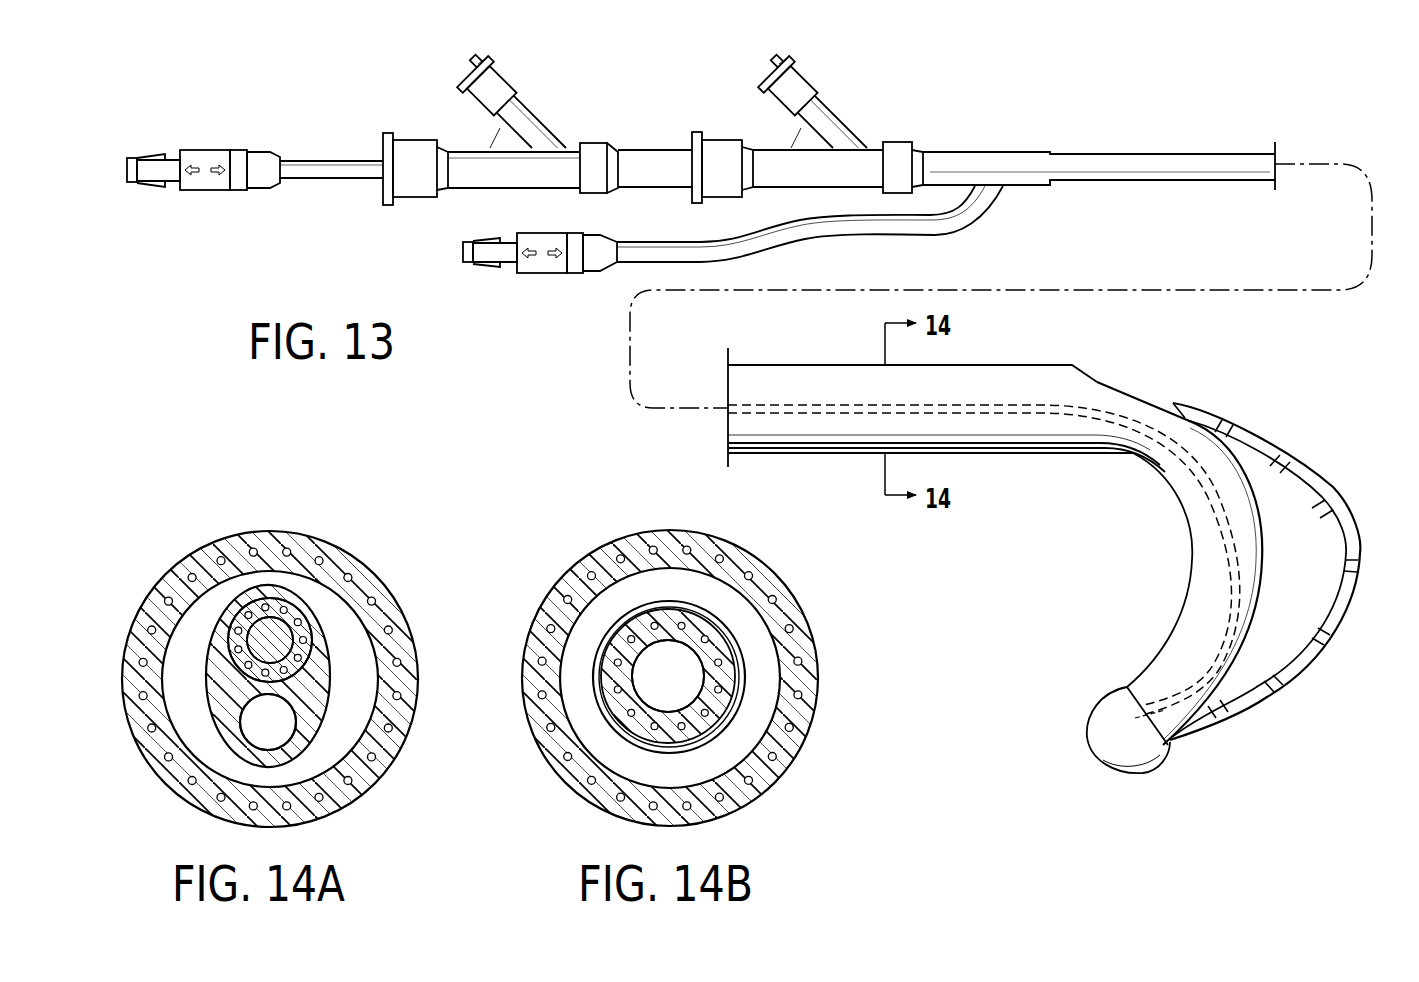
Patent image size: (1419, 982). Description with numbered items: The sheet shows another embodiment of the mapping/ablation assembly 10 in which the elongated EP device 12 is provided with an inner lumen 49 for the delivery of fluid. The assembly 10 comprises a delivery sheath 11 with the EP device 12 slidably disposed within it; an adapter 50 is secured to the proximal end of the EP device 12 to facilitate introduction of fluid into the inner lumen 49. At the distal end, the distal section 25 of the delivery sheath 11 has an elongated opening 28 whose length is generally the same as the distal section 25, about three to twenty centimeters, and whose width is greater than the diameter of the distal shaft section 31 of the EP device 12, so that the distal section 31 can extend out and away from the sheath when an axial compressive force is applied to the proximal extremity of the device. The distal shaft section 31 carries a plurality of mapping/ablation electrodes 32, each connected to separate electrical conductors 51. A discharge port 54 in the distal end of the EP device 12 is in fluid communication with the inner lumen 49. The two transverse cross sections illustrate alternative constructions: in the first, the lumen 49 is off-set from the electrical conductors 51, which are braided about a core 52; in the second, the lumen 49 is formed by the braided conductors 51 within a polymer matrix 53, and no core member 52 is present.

In FIG. 13, the mapping/ablation assembly 10 is at (1318, 128).
In FIG. 13, the delivery sheath 11 is at (1190, 152).
In FIG. 14A, the delivery sheath 11 is at (225, 528).
In FIG. 14B, the delivery sheath 11 is at (790, 774).
In FIG. 13, the EP device 12 is at (1210, 396).
In FIG. 14A, the EP device 12 is at (296, 580).
In FIG. 14B, the EP device 12 is at (752, 705).
In FIG. 13, the distal section of the delivery sheath 25 is at (1193, 557).
In FIG. 13, the elongated opening 28 is at (1265, 563).
In FIG. 13, the distal shaft section 31 is at (1327, 647).
In FIG. 13, the mapping/ablation electrodes 32 is at (1273, 433).
In FIG. 13, the inner lumen 49 is at (984, 404).
In FIG. 14A, the inner lumen 49 is at (262, 730).
In FIG. 14B, the inner lumen 49 is at (658, 653).
In FIG. 13, the adapter 50 is at (467, 148).
In FIG. 14A, the electrical conductors 51 is at (233, 647).
In FIG. 14B, the electrical conductors 51 is at (723, 675).
In FIG. 14A, the core 52 is at (280, 643).
In FIG. 14B, the polymer matrix 53 is at (630, 718).
In FIG. 13, the discharge port 54 is at (1172, 747).